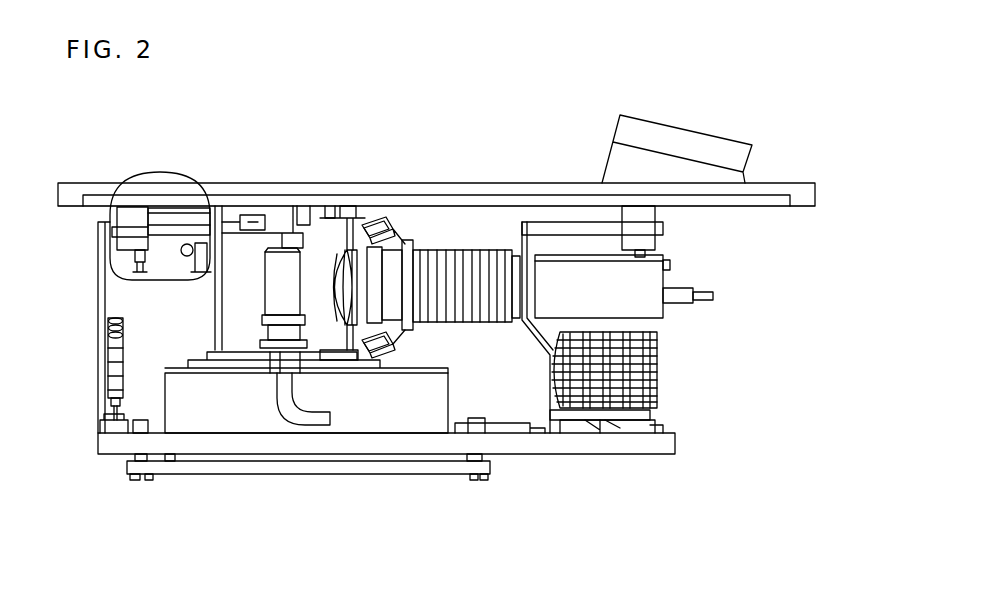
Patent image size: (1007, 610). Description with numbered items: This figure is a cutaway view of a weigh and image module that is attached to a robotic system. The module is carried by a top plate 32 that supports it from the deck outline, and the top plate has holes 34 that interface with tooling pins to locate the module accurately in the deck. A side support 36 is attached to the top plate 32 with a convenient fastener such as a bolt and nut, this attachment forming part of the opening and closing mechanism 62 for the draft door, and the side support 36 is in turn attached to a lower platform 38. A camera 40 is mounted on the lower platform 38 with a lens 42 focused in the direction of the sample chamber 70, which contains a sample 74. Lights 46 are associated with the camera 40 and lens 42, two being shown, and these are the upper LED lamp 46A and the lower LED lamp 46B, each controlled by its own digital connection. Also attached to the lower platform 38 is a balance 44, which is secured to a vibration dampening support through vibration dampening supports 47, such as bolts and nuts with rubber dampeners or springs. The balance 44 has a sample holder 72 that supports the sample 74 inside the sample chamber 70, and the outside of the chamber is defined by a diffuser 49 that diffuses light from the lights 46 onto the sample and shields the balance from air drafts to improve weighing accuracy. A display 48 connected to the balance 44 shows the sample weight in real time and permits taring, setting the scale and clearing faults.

The top plate 32 is at (812, 194).
The holes 34 is at (781, 217).
The side support 36 is at (112, 342).
The lower platform 38 is at (661, 446).
The camera 40 is at (665, 322).
The lens 42 is at (452, 258).
The balance 44 is at (372, 412).
The lights 46 is at (381, 208).
The upper LED lamp 46A is at (395, 232).
The lower LED lamp 46B is at (397, 352).
The vibration dampening supports 47 is at (147, 491).
The display 48 is at (692, 122).
The diffuser 49 is at (200, 301).
The opening and closing mechanism 62 is at (160, 172).
The sample chamber 70 is at (324, 233).
The sample holder 72 is at (282, 336).
The sample 74 is at (262, 263).